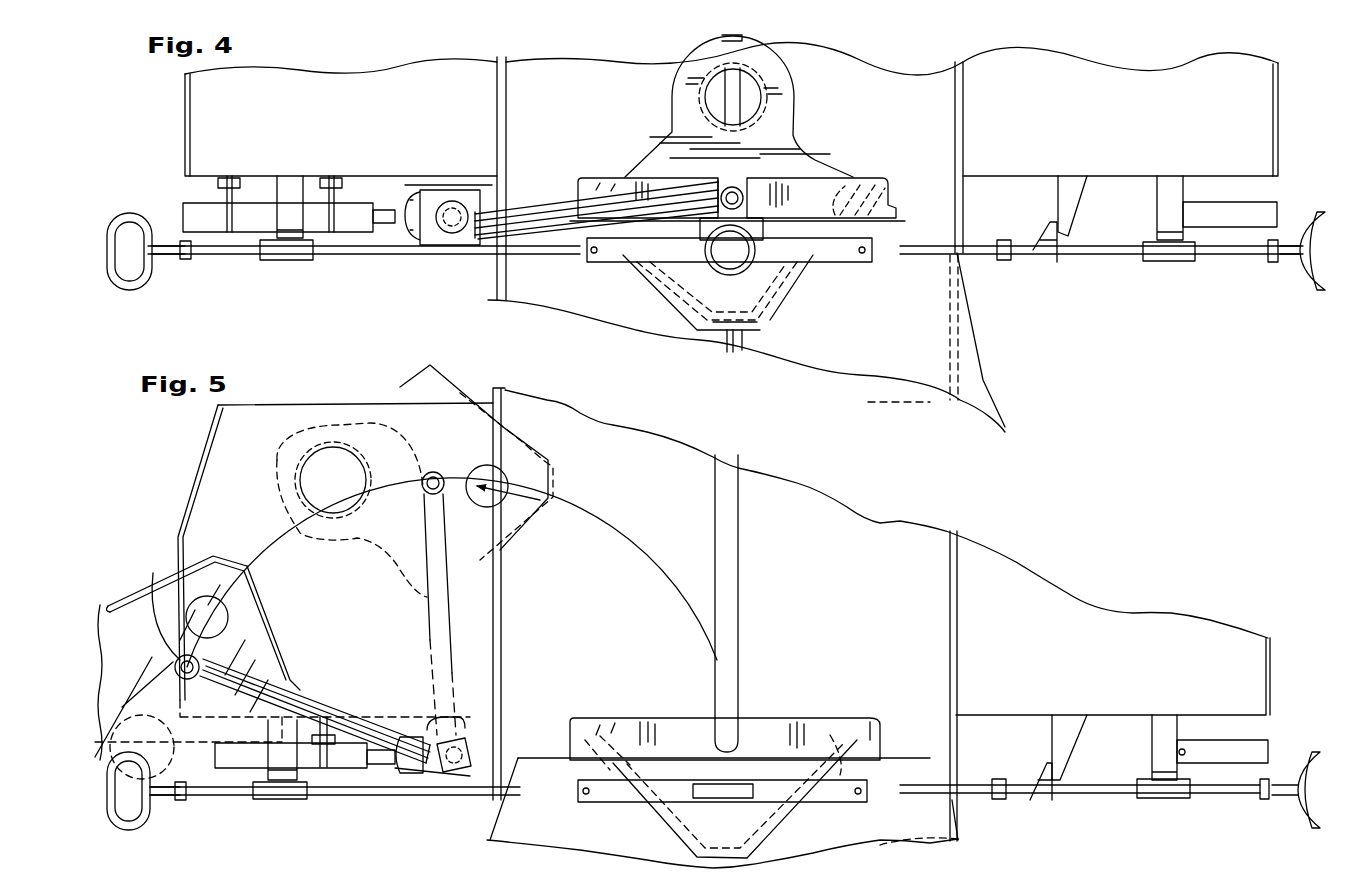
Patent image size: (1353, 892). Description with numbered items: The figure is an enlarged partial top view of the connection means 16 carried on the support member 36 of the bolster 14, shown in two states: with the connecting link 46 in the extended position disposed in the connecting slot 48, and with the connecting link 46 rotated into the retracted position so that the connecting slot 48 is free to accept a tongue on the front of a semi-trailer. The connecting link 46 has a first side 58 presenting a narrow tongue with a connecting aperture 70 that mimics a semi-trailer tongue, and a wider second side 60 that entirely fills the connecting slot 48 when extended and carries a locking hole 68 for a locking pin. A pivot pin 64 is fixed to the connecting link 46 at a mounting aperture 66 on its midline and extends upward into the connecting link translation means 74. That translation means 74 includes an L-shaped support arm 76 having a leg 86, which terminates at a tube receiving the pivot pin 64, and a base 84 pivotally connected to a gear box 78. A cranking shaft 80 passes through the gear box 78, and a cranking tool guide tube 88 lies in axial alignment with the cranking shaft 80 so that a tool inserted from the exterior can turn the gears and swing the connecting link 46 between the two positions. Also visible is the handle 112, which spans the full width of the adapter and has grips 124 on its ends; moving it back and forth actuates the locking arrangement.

In FIG. 4, the bolster 14 is at (1137, 80).
In FIG. 5, the bolster 14 is at (1048, 615).
In FIG. 4, the connection means 16 is at (850, 176).
In FIG. 4, the support member 36 is at (556, 97).
In FIG. 5, the support member 36 is at (856, 557).
In FIG. 4, the connecting link 46 is at (802, 134).
In FIG. 5, the connecting link 46 is at (105, 600).
In FIG. 4, the connecting slot 48 is at (766, 352).
In FIG. 5, the connecting slot 48 is at (503, 811).
In FIG. 4, the first side 58 is at (778, 60).
In FIG. 5, the first side 58 is at (167, 806).
In FIG. 4, the second side 60 is at (735, 330).
In FIG. 5, the second side 60 is at (205, 622).
In FIG. 4, the pivot pin 64 is at (727, 182).
In FIG. 5, the pivot pin 64 is at (170, 586).
In FIG. 4, the mounting aperture 66 is at (748, 345).
In FIG. 5, the mounting aperture 66 is at (425, 473).
In FIG. 4, the locking hole 68 is at (727, 268).
In FIG. 5, the locking hole 68 is at (518, 422).
In FIG. 4, the connecting aperture 70 is at (729, 82).
In FIG. 5, the connecting aperture 70 is at (205, 765).
In FIG. 4, the connecting link translation means 74 is at (534, 232).
In FIG. 5, the connecting link translation means 74 is at (410, 773).
In FIG. 4, the support arm 76 is at (498, 222).
In FIG. 5, the support arm 76 is at (427, 619).
In FIG. 4, the gear box 78 is at (421, 236).
In FIG. 5, the gear box 78 is at (432, 780).
In FIG. 4, the cranking shaft 80 is at (392, 220).
In FIG. 5, the cranking shaft 80 is at (386, 769).
In FIG. 4, the base 84 is at (450, 234).
In FIG. 5, the base 84 is at (468, 754).
In FIG. 4, the leg 86 is at (553, 222).
In FIG. 5, the leg 86 is at (338, 707).
In FIG. 4, the cranking tool guide tube 88 is at (350, 226).
In FIG. 5, the cranking tool guide tube 88 is at (338, 770).
In FIG. 4, the handle 112 is at (242, 254).
In FIG. 5, the handle 112 is at (312, 800).
In FIG. 4, the grips 124 is at (150, 280).
In FIG. 5, the grips 124 is at (146, 843).